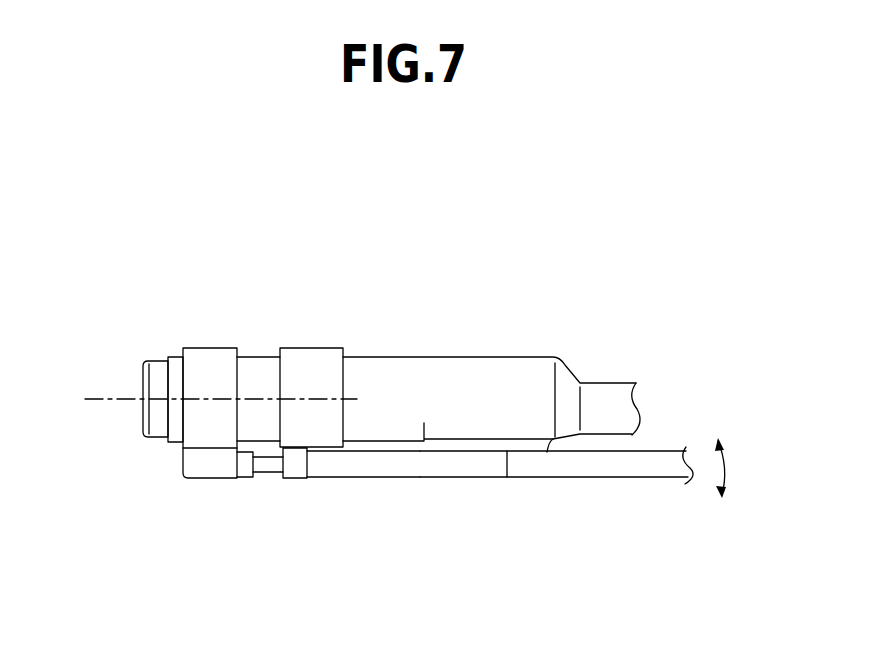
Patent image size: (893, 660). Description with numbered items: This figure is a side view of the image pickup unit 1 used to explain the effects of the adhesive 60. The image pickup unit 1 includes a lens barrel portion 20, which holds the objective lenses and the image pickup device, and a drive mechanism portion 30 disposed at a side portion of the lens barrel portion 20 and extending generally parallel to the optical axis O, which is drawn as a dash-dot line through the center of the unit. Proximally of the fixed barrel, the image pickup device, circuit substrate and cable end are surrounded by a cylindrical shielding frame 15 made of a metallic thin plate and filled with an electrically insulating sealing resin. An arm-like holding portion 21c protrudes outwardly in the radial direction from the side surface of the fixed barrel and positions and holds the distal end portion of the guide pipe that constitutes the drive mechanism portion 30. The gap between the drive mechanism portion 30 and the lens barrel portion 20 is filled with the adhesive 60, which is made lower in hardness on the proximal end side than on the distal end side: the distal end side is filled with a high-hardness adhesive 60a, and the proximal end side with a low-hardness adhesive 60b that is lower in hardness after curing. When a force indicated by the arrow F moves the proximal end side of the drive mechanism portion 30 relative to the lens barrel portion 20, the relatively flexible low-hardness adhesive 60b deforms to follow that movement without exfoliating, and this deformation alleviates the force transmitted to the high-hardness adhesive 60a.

The image pickup unit 1 is at (275, 266).
The shielding frame 15 is at (456, 357).
The lens barrel portion 20 is at (324, 348).
The holding portion 21c is at (295, 478).
The drive mechanism portion 30 is at (566, 478).
The adhesive 60 is at (407, 521).
The high-hardness adhesive 60a is at (386, 451).
The low-hardness adhesive 60b is at (463, 500).
The optical axis O is at (102, 398).
The arrow F (force) F is at (735, 468).